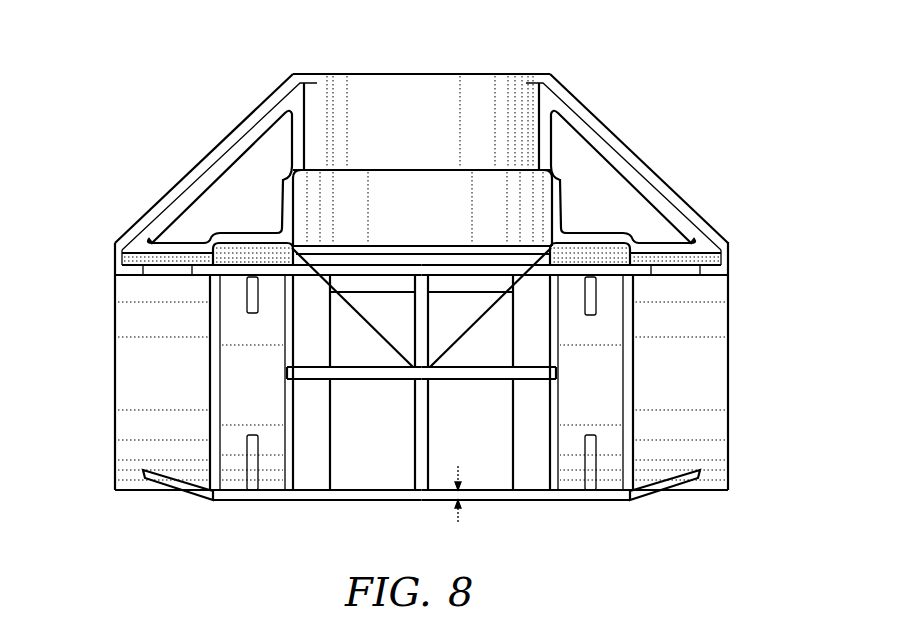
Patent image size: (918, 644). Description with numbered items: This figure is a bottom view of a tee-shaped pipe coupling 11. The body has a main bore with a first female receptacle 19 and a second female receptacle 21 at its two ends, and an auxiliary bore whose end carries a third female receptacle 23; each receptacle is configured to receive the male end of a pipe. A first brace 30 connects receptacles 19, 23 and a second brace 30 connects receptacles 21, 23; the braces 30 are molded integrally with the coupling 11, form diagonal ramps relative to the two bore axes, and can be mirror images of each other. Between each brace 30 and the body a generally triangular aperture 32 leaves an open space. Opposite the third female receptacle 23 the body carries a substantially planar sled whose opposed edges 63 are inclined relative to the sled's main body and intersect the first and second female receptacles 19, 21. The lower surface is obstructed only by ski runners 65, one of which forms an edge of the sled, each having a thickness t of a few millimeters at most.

The pipe coupling 11 is at (431, 293).
The first female receptacle 19 is at (113, 430).
The second female receptacle 21 is at (730, 430).
The third female receptacle 23 is at (430, 75).
The brace 30 is at (228, 135).
The aperture 32 is at (228, 192).
The opposed edges 63 is at (158, 483).
The ski runners 65 is at (310, 487).